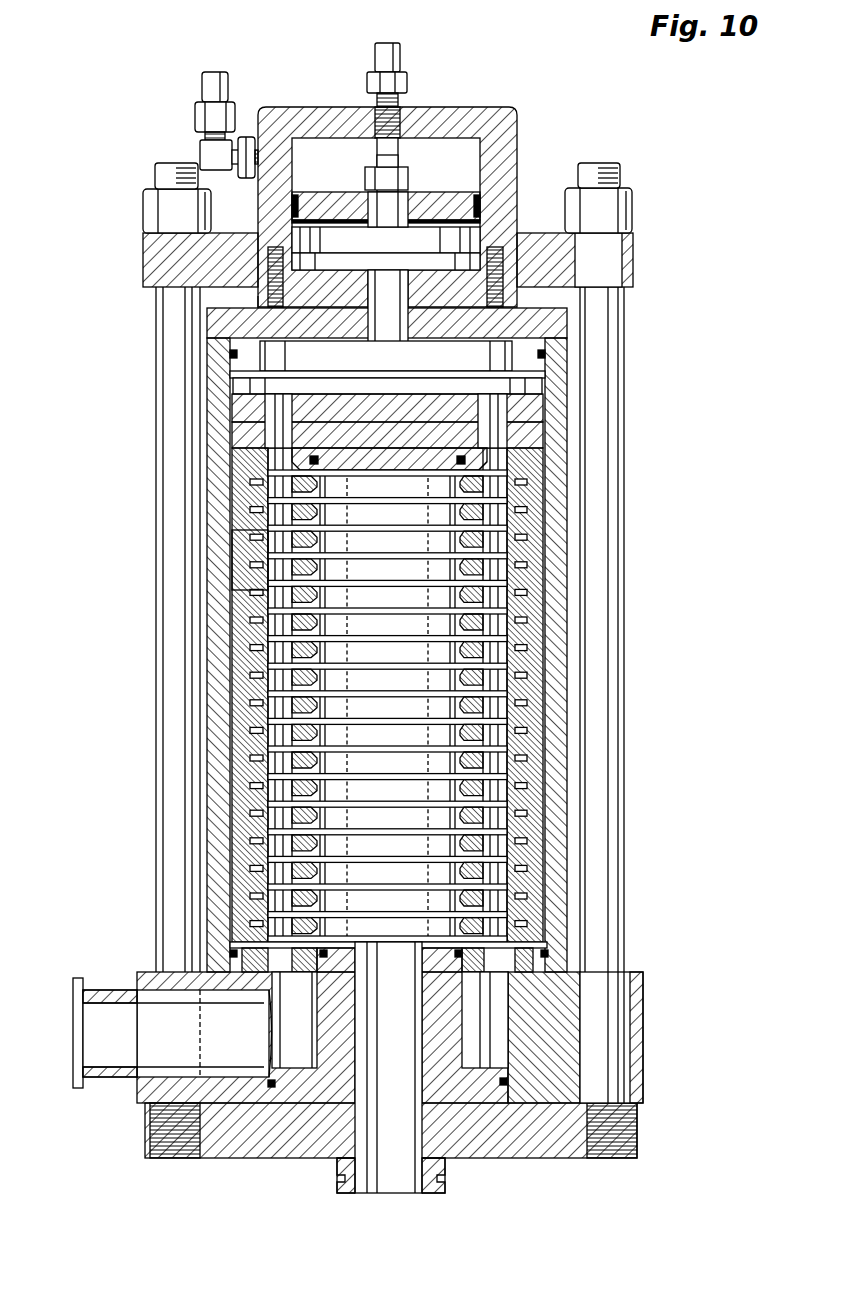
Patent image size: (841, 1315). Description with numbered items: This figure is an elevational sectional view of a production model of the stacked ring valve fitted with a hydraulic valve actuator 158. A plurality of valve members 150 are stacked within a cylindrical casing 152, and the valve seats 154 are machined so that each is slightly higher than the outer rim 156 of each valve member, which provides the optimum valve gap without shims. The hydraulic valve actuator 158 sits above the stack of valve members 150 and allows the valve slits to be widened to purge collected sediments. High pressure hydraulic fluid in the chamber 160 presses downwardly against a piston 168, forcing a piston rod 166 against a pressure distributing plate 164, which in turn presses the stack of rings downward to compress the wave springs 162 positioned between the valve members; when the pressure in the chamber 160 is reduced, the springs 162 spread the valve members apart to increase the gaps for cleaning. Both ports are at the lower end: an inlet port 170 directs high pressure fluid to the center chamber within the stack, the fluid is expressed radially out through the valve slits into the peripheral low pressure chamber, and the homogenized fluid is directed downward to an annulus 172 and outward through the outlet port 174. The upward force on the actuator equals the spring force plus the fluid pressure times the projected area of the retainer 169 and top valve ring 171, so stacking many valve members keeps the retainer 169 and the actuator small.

The valve members 150 is at (547, 650).
The cylindrical casing 152 is at (565, 703).
The valve seats 154 is at (255, 610).
The outer rim 156 is at (233, 490).
The hydraulic valve actuator 158 is at (183, 120).
The chamber 160 is at (455, 160).
The wave springs 162 is at (530, 495).
The pressure distributing plate 164 is at (545, 405).
The piston rod 166 is at (357, 386).
The piston 168 is at (330, 238).
The retainer 169 is at (530, 432).
The inlet port 170 is at (365, 1165).
The top valve ring 171 is at (545, 452).
The annulus 172 is at (490, 1025).
The outlet port 174 is at (110, 1045).